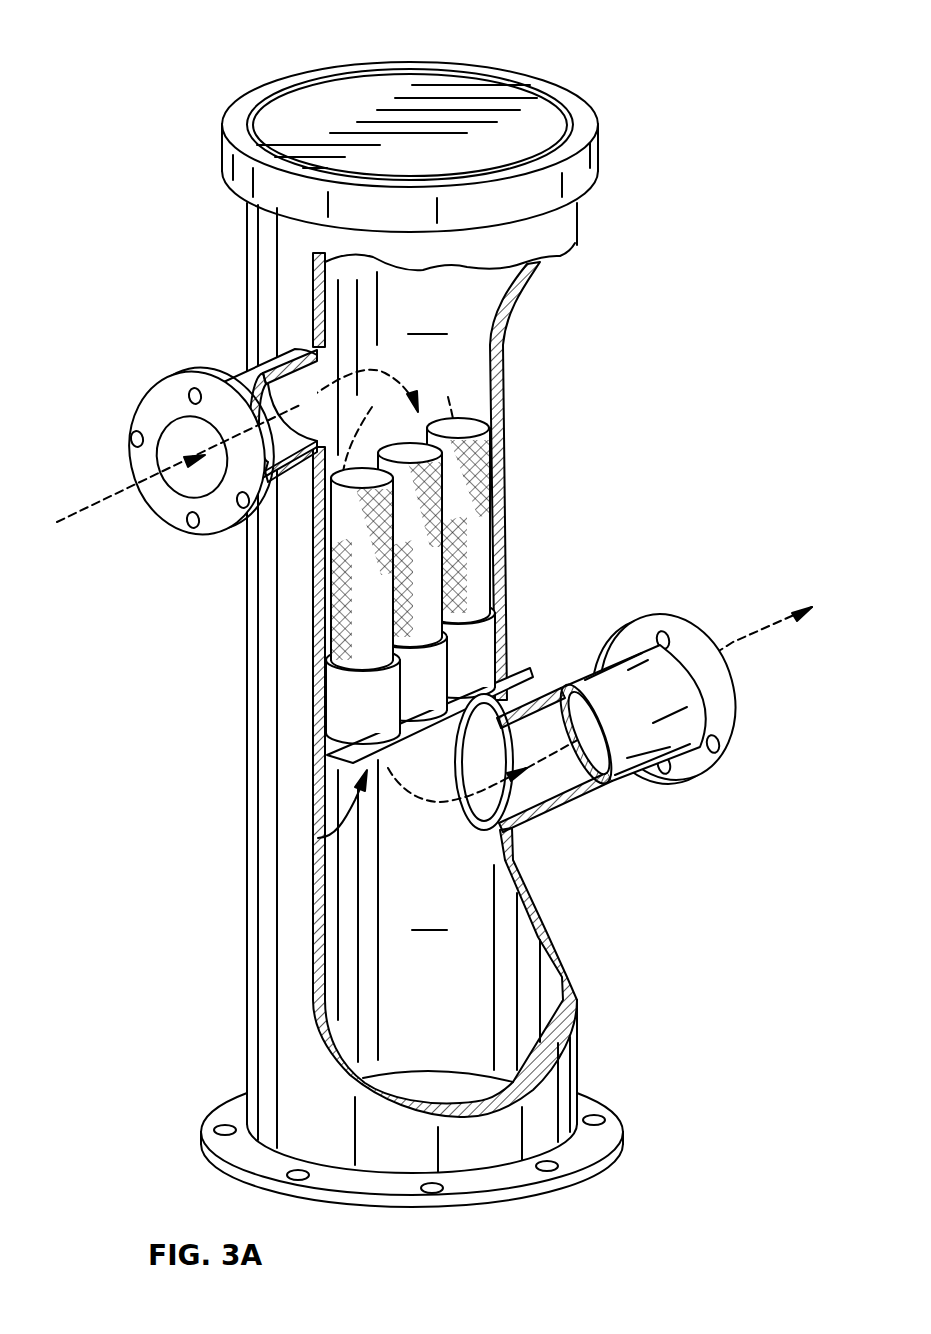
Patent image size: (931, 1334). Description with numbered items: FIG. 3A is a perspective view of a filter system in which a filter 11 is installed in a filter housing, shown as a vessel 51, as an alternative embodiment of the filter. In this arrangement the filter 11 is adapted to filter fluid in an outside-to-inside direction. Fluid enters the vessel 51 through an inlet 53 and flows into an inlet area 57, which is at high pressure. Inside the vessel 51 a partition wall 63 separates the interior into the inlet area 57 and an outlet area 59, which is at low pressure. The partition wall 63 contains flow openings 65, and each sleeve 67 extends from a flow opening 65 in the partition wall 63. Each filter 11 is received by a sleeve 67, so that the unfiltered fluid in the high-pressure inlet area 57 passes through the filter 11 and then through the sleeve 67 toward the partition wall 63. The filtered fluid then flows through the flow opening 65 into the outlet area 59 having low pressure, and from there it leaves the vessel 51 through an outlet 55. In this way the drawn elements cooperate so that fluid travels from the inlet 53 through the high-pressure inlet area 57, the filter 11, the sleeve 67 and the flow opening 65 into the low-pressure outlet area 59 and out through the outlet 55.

The vessel 51 is at (214, 78).
The inlet 53 is at (143, 407).
The outlet 55 is at (728, 698).
The inlet area 57 is at (478, 373).
The outlet area 59 is at (507, 936).
The filter 11 is at (482, 556).
The sleeve 67 is at (360, 690).
The partition wall 63 is at (347, 748).
The flow opening 65 is at (318, 838).